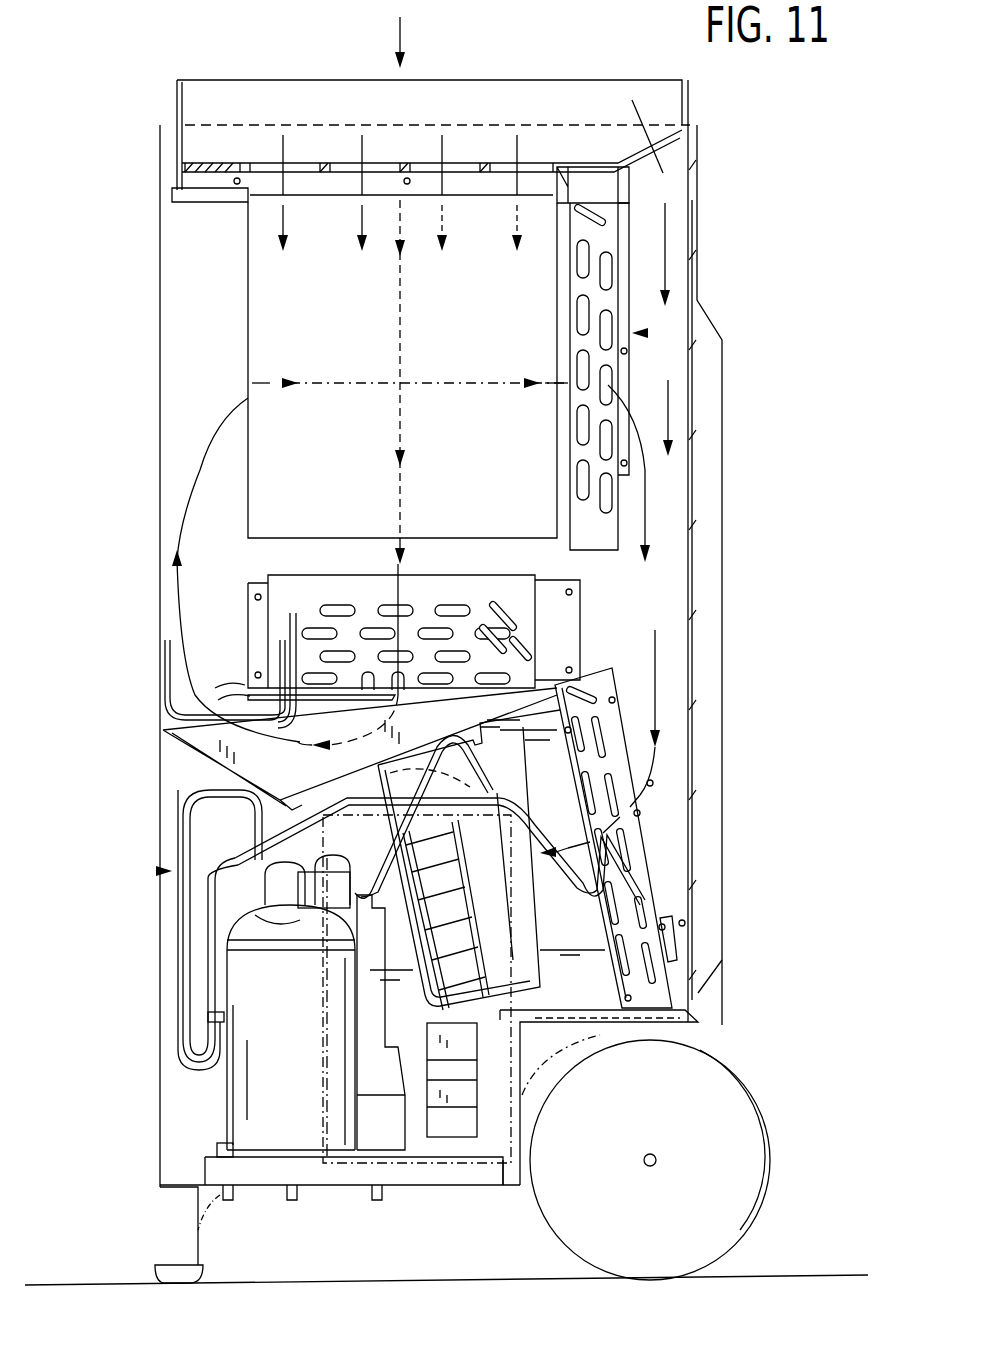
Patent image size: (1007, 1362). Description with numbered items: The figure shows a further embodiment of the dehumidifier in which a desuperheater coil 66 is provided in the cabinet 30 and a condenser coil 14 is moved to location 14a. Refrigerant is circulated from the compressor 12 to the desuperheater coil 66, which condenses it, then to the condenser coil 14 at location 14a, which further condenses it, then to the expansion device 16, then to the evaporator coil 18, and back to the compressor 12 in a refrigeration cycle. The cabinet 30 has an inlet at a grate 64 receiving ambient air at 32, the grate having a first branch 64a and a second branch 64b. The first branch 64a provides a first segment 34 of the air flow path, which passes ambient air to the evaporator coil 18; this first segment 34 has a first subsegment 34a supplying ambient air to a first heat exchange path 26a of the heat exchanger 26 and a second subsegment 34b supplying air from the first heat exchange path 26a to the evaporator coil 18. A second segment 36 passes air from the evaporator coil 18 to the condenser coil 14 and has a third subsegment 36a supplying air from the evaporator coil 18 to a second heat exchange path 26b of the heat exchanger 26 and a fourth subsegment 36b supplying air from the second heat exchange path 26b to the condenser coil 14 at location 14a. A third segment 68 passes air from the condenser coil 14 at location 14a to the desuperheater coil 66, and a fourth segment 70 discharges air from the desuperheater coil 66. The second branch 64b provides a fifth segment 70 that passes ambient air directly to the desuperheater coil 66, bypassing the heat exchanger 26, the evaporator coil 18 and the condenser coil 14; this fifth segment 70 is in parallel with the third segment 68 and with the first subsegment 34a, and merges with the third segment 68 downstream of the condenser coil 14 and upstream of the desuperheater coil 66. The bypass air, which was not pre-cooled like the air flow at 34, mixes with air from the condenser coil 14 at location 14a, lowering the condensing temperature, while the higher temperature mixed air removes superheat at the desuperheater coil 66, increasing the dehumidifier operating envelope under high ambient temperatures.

The compressor 12 is at (260, 1085).
The condenser coil 14 is at (606, 357).
The location of condenser coil 14a is at (648, 333).
The expansion device 16 is at (156, 871).
The evaporator coil 18 is at (485, 580).
The heat exchanger 26 is at (248, 248).
The first heat exchange path 26a is at (400, 308).
The second heat exchange path 26b is at (408, 387).
The cabinet 30 is at (159, 240).
The ambient air 32 is at (400, 30).
The first segment of air flow path 34 is at (393, 558).
The first subsegment 34a is at (362, 208).
The second subsegment 34b is at (403, 540).
The second segment of air flow path 36 is at (248, 398).
The third subsegment 36a is at (255, 388).
The fourth subsegment 36b is at (553, 388).
The grate 64 is at (218, 160).
The first branch 64a is at (517, 145).
The second branch 64b is at (643, 118).
The desuperheater coil 66 is at (632, 878).
The third segment of air flow path 68 is at (648, 518).
The fourth and fifth segments of air flow path 70 is at (672, 390).